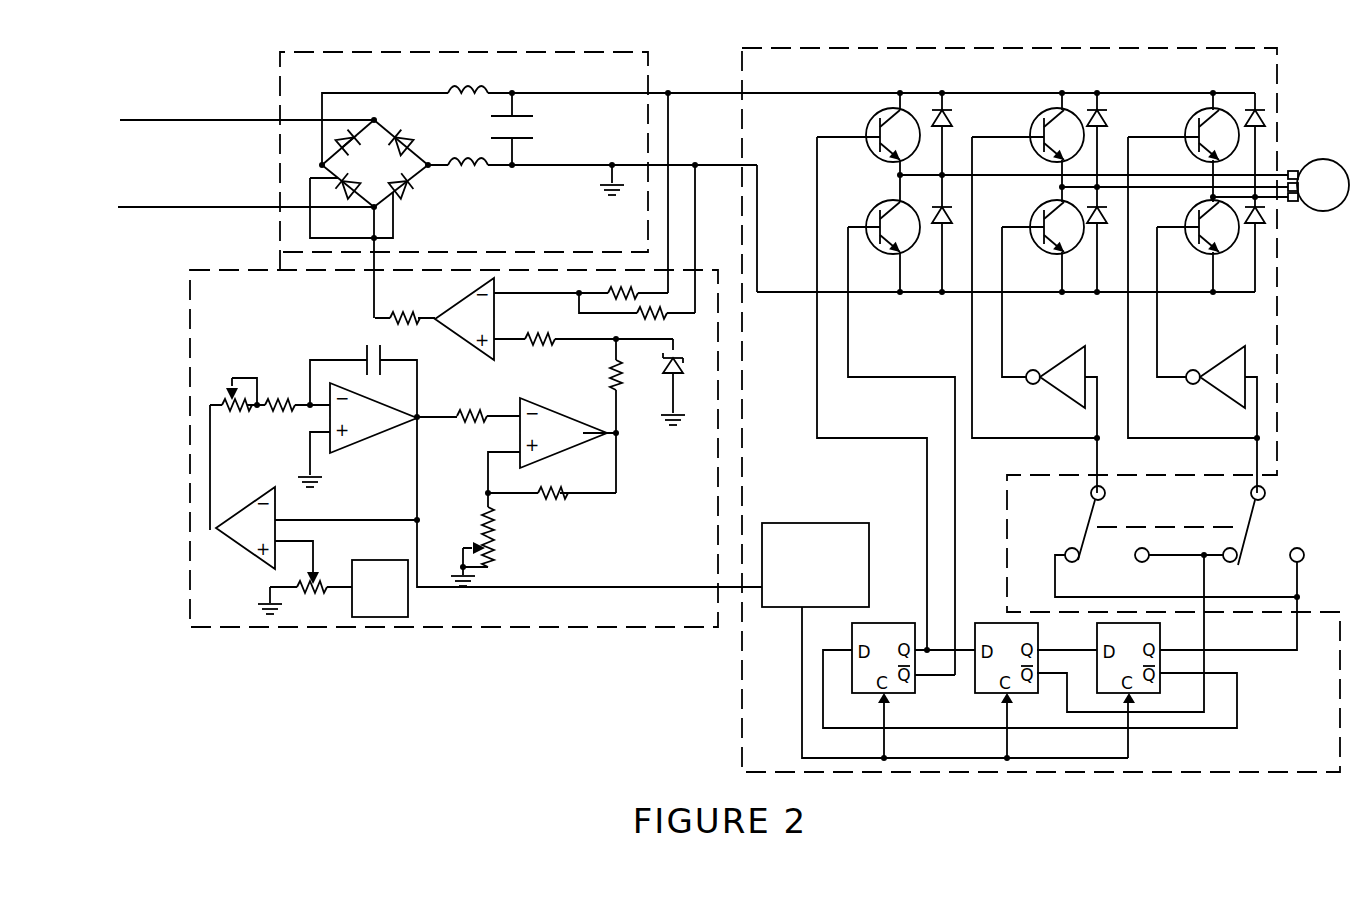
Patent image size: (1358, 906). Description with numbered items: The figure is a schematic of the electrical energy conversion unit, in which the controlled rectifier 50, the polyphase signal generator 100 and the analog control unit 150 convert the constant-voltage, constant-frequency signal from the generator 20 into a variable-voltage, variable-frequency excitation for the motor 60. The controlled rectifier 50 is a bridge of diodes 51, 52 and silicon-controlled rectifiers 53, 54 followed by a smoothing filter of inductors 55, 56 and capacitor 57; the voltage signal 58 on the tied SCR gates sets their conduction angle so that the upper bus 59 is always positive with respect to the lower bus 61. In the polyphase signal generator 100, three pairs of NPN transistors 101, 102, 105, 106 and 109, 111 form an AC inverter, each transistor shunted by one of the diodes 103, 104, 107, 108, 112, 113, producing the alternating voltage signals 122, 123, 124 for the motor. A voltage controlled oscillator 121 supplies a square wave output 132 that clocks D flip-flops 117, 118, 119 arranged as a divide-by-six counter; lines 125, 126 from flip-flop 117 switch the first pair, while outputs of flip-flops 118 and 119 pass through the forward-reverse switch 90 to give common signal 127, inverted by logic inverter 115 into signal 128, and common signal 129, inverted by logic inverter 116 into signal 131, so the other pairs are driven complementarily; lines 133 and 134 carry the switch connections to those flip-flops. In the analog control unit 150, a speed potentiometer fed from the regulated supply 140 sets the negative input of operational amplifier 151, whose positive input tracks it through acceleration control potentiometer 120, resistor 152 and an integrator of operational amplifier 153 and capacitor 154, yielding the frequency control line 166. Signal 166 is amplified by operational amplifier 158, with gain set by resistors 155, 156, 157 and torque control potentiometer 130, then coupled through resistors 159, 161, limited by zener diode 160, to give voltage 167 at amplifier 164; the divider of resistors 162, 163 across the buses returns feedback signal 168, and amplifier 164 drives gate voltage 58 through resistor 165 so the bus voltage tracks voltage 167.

The generator 20 is at (243, 164).
The controlled rectifier 50 is at (310, 72).
The diode 51 is at (338, 135).
The diode 52 is at (408, 120).
The silicon-controlled rectifier 53 is at (398, 200).
The silicon-controlled rectifier 54 is at (335, 182).
The inductor 55 is at (487, 90).
The inductor 56 is at (478, 172).
The capacitor 57 is at (545, 138).
The voltage signal 58 is at (370, 272).
The upper bus 59 is at (680, 88).
The lower bus 61 is at (693, 158).
The motor 60 is at (1317, 159).
The forward-reverse switch 90 is at (1108, 512).
The polyphase signal generator 100 is at (755, 645).
The NPN transistor 101 is at (870, 156).
The NPN transistor 102 is at (870, 216).
The diode 103 is at (955, 125).
The diode 104 is at (955, 210).
The NPN transistor 105 is at (1035, 125).
The NPN transistor 106 is at (1032, 214).
The diode 107 is at (1115, 125).
The diode 108 is at (1112, 208).
The NPN transistor 109 is at (1190, 124).
The NPN transistor 111 is at (1205, 250).
The diode 112 is at (1266, 117).
The diode 113 is at (1268, 262).
The logic inverter 115 is at (1058, 348).
The logic inverter 116 is at (1222, 360).
The D flip-flop 117 is at (903, 697).
The D flip-flop 118 is at (1028, 694).
The D flip-flop 119 is at (1150, 694).
The acceleration control potentiometer 120 is at (230, 378).
The voltage controlled oscillator 121 is at (810, 516).
The alternating voltage signal 122 is at (1298, 202).
The alternating voltage signal 123 is at (1295, 208).
The alternating voltage signal 124 is at (1292, 215).
The line 125 is at (812, 352).
The line 126 is at (855, 325).
The common signal 127 is at (965, 327).
The signal 128 is at (1008, 318).
The common signal 129 is at (1122, 305).
The torque control potentiometer 130 is at (500, 548).
The signal 131 is at (1163, 318).
The square wave output 132 is at (796, 625).
The switch output line 133 is at (1210, 642).
The switch output line 134 is at (1270, 655).
The regulated voltage supply 140 is at (398, 560).
The analog control unit 150 is at (480, 620).
The operational amplifier 151 is at (244, 556).
The resistor 152 is at (278, 412).
The operational amplifier 153 is at (375, 448).
The capacitor 154 is at (362, 348).
The resistor 155 is at (462, 424).
The resistor 156 is at (480, 520).
The resistor 157 is at (550, 502).
The operational amplifier 158 is at (553, 412).
The resistor 159 is at (628, 372).
The zener diode 160 is at (688, 366).
The resistor 161 is at (538, 344).
The resistor 162 is at (618, 282).
The resistor 163 is at (655, 318).
The operational amplifier 164 is at (455, 292).
The resistor 165 is at (410, 328).
The frequency control line 166 is at (650, 594).
The voltage 167 is at (508, 350).
The negative feedback signal 168 is at (500, 283).